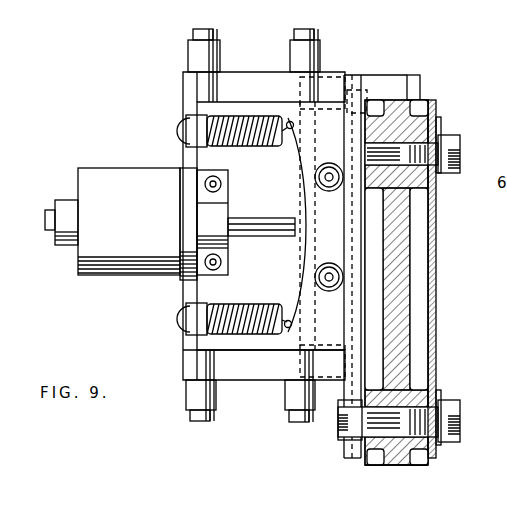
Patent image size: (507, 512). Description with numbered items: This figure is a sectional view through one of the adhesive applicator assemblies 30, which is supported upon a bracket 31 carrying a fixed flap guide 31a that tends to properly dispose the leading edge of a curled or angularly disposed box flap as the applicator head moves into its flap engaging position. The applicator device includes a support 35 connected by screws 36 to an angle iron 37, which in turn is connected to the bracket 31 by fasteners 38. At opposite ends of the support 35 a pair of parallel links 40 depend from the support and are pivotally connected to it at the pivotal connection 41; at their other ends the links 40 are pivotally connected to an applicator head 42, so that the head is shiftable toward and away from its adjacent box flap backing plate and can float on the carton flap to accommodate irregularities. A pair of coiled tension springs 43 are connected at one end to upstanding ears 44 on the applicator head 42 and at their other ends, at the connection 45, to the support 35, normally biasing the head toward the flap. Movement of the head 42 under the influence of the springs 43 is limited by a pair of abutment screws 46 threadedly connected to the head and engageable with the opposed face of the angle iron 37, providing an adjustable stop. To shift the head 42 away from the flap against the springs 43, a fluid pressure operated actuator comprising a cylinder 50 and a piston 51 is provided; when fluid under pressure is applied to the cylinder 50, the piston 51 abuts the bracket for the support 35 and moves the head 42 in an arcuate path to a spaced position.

The adhesive applicator assembly 30 is at (134, 130).
The bracket 31 is at (403, 458).
The fixed flap guide 31a is at (437, 268).
The support 35 is at (256, 372).
The screws 36 is at (329, 192).
The angle iron 37 is at (366, 82).
The fasteners 38 is at (447, 140).
The parallel links 40 is at (195, 52).
The pivotal connection 41 is at (212, 34).
The applicator head 42 is at (190, 286).
The coiled tension springs 43 is at (236, 146).
The upstanding ears 44 is at (190, 122).
The spring connection 45 is at (290, 130).
The abutment screws 46 is at (342, 76).
The cylinder 50 is at (98, 178).
The piston 51 is at (276, 226).